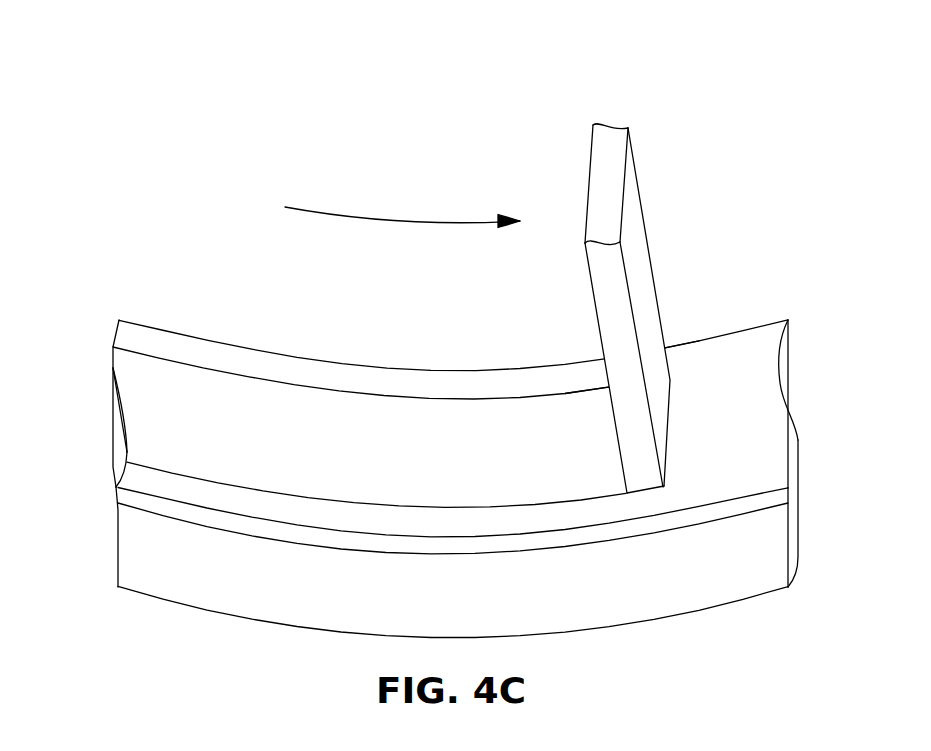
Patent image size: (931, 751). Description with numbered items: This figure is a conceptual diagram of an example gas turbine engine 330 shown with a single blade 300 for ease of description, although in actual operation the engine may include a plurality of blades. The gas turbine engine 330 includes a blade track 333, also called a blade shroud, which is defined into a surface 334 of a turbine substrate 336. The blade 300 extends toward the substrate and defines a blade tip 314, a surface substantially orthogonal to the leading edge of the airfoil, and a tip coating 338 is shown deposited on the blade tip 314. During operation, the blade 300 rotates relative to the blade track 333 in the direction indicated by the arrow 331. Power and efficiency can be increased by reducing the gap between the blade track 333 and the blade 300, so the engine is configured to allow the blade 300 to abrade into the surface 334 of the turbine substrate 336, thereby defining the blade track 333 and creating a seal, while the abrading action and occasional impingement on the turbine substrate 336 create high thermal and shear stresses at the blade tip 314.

The gas turbine engine 330 is at (426, 333).
The arrow 331 is at (368, 219).
The blade track 333 is at (220, 317).
The surface 334 is at (745, 343).
The turbine substrate 336 is at (130, 550).
The blade 300 is at (620, 308).
The blade tip 314 is at (670, 437).
The tip coating 338 is at (623, 492).